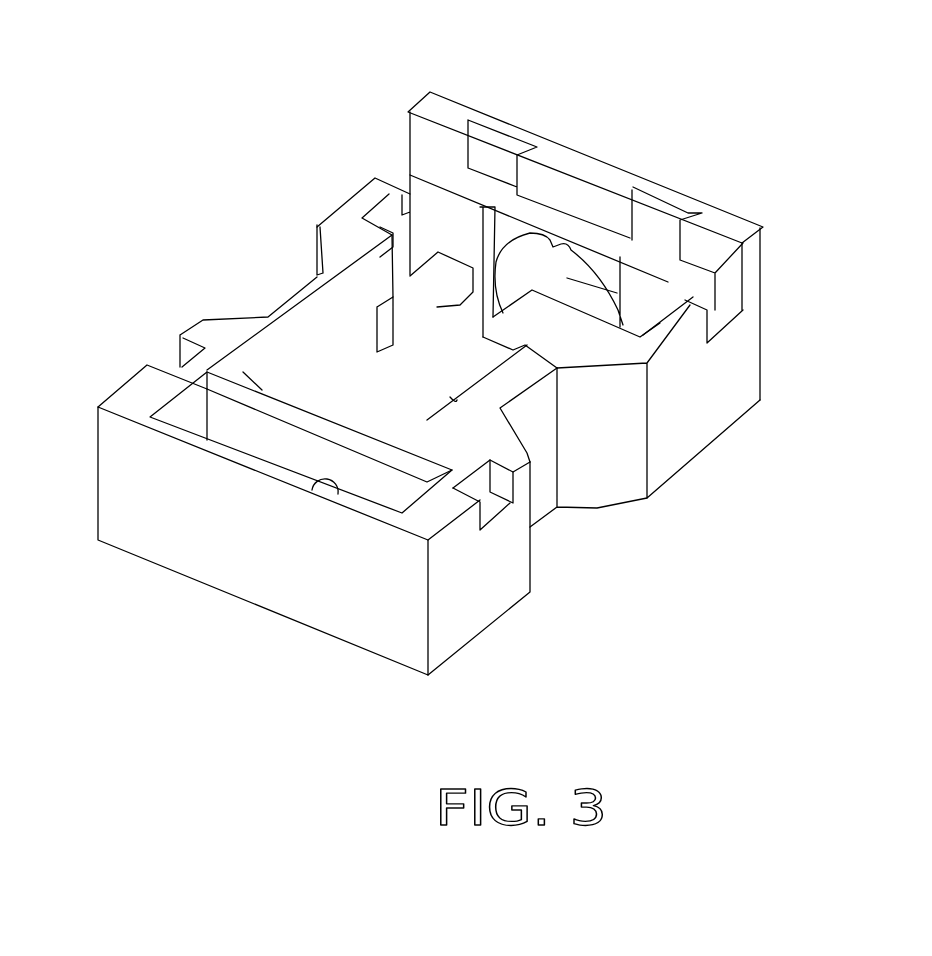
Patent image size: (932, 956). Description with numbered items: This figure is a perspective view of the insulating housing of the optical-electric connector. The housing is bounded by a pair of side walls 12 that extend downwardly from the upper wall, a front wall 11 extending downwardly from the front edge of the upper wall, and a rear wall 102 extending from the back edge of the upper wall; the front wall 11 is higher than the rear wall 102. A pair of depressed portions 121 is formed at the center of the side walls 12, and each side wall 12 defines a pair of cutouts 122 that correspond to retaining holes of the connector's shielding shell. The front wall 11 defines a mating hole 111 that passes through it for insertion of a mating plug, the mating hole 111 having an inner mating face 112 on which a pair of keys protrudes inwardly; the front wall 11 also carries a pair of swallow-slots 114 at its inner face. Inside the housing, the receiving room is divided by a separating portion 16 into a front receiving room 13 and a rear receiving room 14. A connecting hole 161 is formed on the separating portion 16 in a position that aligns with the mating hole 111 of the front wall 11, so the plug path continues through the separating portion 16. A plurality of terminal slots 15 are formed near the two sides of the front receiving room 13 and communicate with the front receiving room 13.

The front wall 11 is at (582, 246).
The side walls 12 is at (703, 402).
The front receiving room 13 is at (483, 248).
The rear receiving room 14 is at (220, 420).
The terminal slots 15 is at (453, 397).
The separating portion 16 is at (395, 382).
The rear wall 102 is at (325, 582).
The mating hole 111 is at (683, 304).
The inner mating face 112 is at (520, 273).
The swallow-slots 114 is at (655, 217).
The depressed portions 121 is at (595, 508).
The cutouts 122 is at (488, 498).
The connecting hole 161 is at (316, 490).